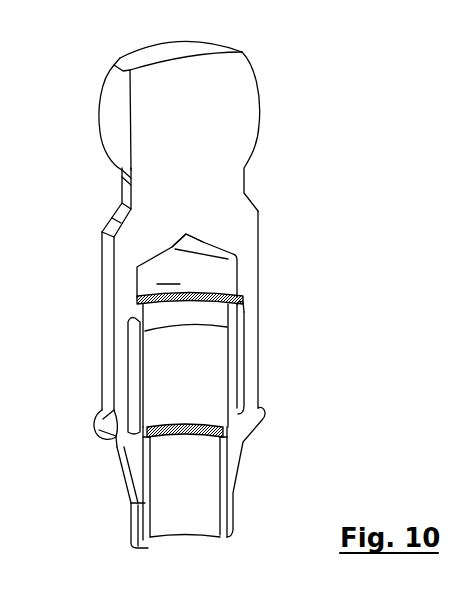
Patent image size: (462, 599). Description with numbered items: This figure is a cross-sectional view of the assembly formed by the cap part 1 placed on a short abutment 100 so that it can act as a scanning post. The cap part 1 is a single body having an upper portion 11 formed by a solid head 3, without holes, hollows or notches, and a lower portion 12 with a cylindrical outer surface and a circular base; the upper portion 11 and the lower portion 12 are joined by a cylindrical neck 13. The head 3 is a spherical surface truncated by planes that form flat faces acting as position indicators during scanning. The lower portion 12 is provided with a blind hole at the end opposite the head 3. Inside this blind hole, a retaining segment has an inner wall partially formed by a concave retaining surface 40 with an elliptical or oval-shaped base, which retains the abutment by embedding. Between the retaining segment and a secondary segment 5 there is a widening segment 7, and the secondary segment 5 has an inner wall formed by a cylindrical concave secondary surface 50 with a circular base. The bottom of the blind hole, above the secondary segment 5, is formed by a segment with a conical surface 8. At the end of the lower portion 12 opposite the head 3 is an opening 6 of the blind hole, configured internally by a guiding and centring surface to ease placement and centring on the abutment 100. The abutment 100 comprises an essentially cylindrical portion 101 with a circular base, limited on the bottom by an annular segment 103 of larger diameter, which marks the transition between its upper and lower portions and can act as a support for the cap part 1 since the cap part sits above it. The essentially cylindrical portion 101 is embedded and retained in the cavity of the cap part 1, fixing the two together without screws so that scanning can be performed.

The cap part 1 is at (279, 380).
The head 3 is at (197, 100).
The secondary segment 5 is at (212, 270).
The opening 6 is at (100, 426).
The widening segment 7 is at (257, 309).
The conical surface 8 is at (196, 238).
The upper portion 11 is at (115, 111).
The lower portion 12 is at (104, 302).
The cylindrical neck 13 is at (118, 180).
The retaining surface 40 is at (148, 386).
The secondary surface 50 is at (168, 274).
The abutment 100 is at (264, 463).
The essentially cylindrical portion 101 is at (233, 364).
The annular segment 103 is at (260, 420).